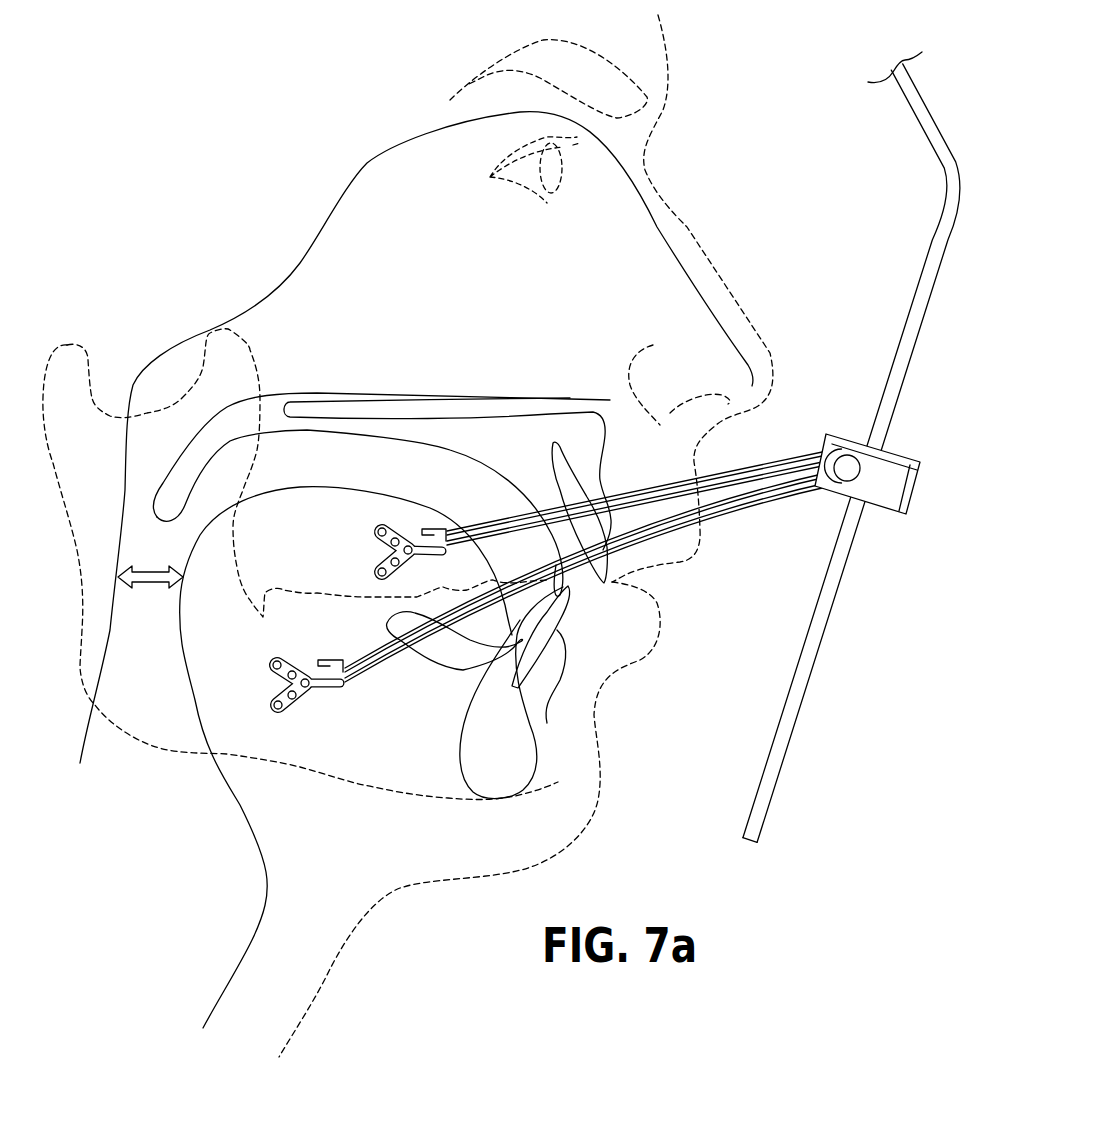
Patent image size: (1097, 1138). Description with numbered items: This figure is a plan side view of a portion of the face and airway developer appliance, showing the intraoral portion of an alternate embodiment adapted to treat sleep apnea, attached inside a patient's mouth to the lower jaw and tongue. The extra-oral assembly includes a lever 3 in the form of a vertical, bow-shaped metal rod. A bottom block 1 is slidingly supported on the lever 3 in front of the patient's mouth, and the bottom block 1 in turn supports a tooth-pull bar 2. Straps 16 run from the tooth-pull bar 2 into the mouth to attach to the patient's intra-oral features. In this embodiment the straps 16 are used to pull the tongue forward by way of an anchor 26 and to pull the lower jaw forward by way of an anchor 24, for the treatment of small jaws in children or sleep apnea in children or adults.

The bottom block 1 is at (920, 490).
The tooth-pull bar 2 is at (840, 448).
The lever 3 is at (913, 303).
The tooth straps 16 is at (646, 494).
The anchor 24 is at (270, 668).
The anchor 26 is at (375, 533).